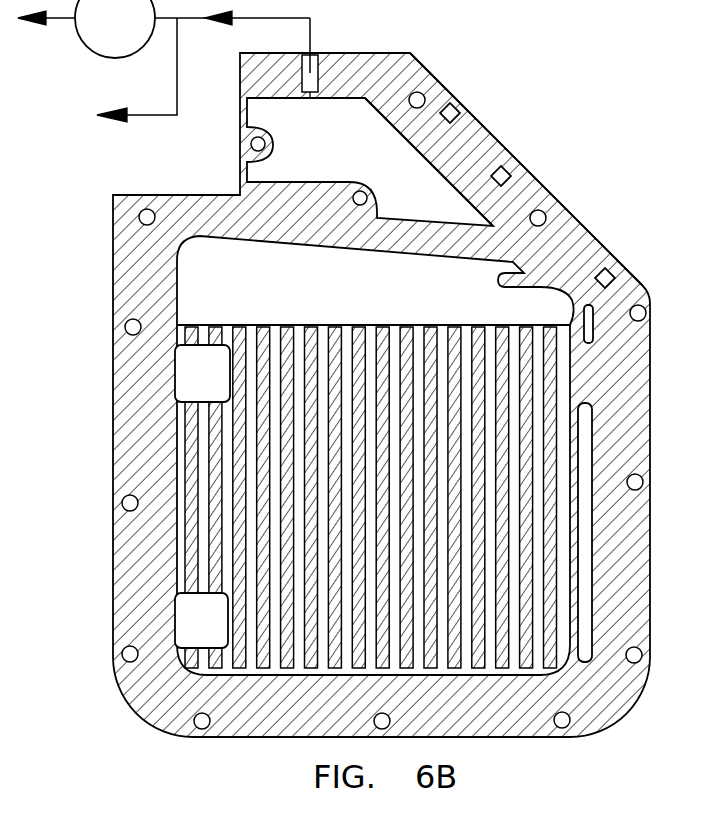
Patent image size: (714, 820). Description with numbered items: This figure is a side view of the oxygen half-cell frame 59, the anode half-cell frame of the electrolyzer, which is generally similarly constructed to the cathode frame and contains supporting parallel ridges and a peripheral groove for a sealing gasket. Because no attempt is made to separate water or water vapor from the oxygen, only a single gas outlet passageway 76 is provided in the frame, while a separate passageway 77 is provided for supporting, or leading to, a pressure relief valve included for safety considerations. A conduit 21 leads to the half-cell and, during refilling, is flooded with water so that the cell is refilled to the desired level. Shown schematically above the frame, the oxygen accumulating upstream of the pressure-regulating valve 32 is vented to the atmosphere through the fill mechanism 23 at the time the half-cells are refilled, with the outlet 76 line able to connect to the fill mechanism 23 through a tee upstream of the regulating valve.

The oxygen half-cell frame 59 is at (524, 80).
The passageway 77 is at (507, 170).
The conduit 21 is at (621, 260).
The gas outlet passageway 76 is at (313, 62).
The pressure-regulating valve 32 is at (90, 53).
The fill mechanism 23 is at (120, 73).